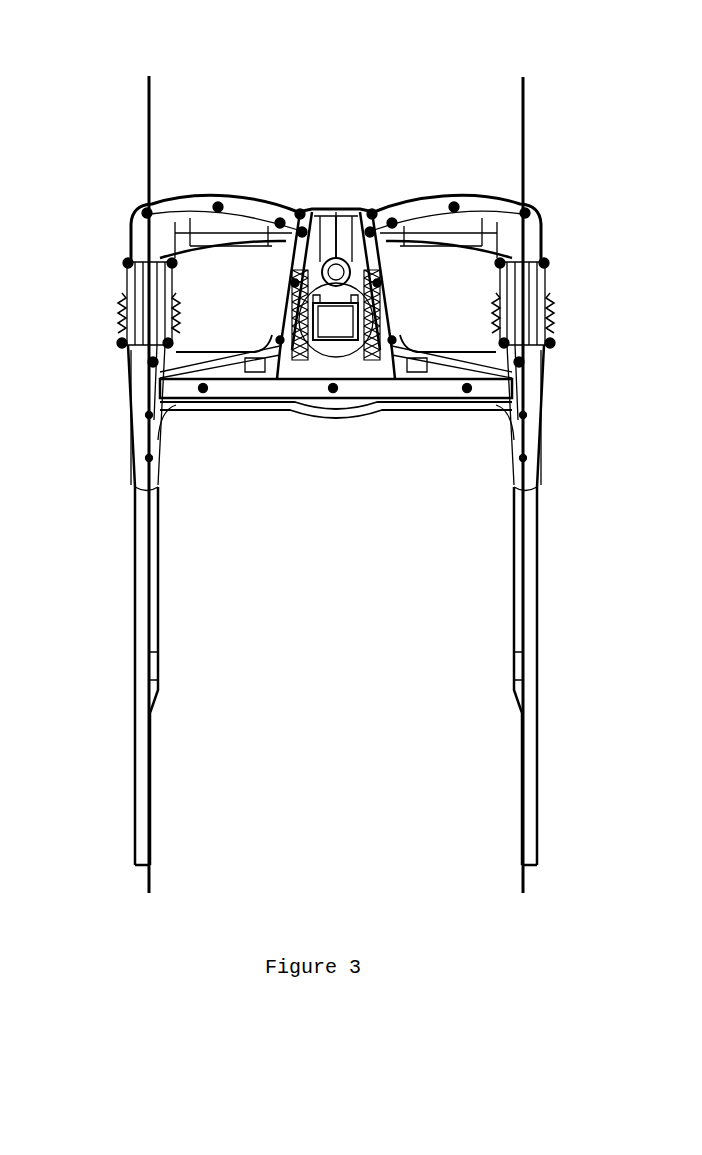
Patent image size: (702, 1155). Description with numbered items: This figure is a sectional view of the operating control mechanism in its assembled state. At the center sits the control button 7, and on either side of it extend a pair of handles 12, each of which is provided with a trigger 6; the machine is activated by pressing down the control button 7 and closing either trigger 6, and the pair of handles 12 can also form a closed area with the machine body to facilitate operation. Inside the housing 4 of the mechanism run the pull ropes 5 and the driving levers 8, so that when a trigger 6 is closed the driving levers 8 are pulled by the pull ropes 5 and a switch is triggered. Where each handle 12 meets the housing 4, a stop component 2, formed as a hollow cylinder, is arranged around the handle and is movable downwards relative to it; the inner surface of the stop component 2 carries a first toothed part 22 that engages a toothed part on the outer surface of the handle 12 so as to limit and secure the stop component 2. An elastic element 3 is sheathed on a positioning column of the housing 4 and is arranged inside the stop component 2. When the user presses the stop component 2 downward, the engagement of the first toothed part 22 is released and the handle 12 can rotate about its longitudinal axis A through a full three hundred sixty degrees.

The longitudinal axis A is at (147, 113).
The handle 12 is at (133, 210).
The trigger 6 is at (203, 248).
The first toothed part 22 is at (130, 283).
The stop component 2 is at (120, 302).
The elastic element 3 is at (125, 323).
The housing 4 is at (128, 400).
The pull rope 5 is at (217, 372).
The driving lever 8 is at (307, 375).
The control button 7 is at (341, 262).